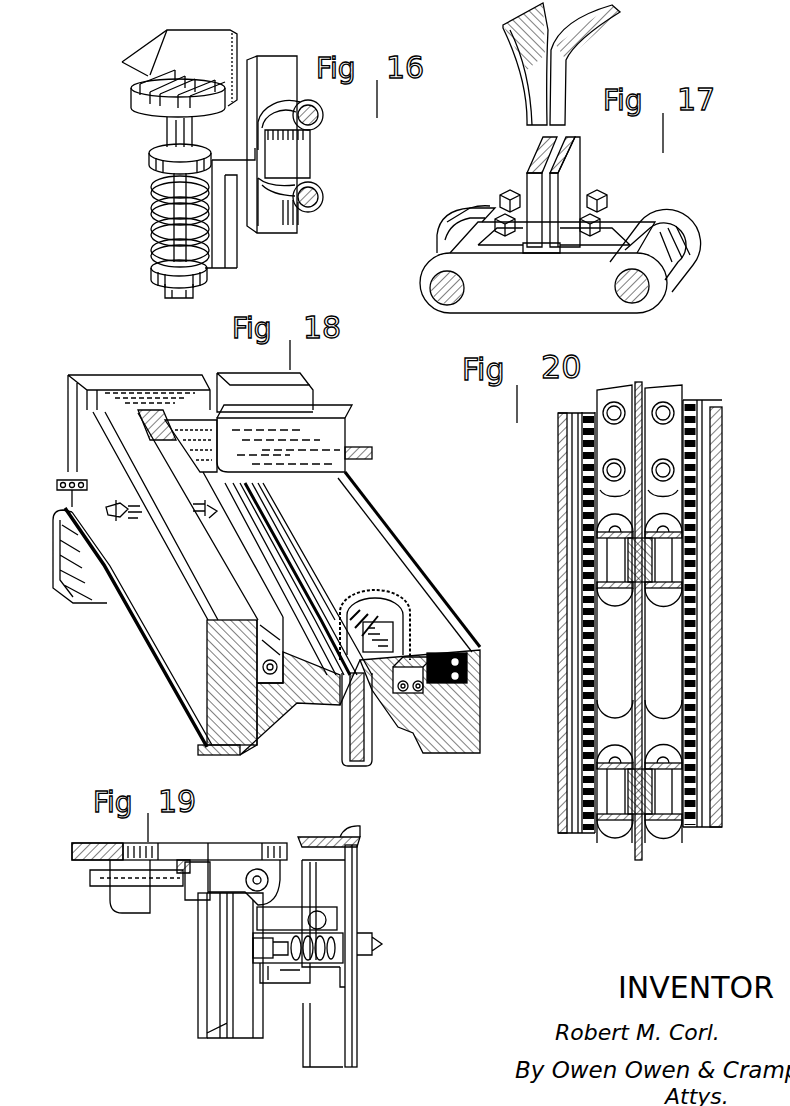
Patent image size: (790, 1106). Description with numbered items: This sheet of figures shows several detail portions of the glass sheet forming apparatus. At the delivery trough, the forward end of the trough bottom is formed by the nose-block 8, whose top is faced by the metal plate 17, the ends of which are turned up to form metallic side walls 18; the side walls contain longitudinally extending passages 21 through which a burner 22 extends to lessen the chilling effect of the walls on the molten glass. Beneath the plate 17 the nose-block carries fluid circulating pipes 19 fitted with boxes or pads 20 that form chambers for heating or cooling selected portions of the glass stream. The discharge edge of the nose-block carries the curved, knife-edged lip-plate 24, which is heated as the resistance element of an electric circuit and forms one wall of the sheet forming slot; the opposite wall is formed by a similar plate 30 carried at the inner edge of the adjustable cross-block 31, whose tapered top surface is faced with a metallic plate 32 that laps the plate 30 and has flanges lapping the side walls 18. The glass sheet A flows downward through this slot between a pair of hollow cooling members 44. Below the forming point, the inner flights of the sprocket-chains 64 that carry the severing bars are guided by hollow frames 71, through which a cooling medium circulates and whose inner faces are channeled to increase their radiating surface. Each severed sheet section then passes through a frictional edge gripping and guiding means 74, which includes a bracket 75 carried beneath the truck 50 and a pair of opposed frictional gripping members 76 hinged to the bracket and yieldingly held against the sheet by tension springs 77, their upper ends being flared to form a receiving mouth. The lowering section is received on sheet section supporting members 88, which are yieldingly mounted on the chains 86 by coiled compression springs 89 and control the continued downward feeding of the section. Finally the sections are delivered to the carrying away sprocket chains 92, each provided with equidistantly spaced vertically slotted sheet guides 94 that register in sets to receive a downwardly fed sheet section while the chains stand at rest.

In FIG. 16, the sheet section supporting member 88 is at (137, 97).
In FIG. 16, the coiled compression spring 89 is at (152, 205).
In FIG. 16, the chain 86 is at (282, 226).
In FIG. 17, the sheet guide 94 is at (556, 101).
In FIG. 17, the sprocket chain 92 is at (653, 285).
In FIG. 18, the passage 21 is at (293, 402).
In FIG. 18, the metallic side wall 18 is at (318, 445).
In FIG. 18, the burner 22 is at (366, 452).
In FIG. 18, the metal plate 17 is at (368, 548).
In FIG. 18, the metallic plate 32 is at (257, 556).
In FIG. 18, the lip-plate 24 is at (307, 590).
In FIG. 18, the fluid circulating pipe 19 is at (380, 610).
In FIG. 18, the box or pad 20 is at (400, 648).
In FIG. 18, the nose-block 8 is at (460, 713).
In FIG. 18, the plate 30 is at (333, 703).
In FIG. 18, the hollow cooling member 44 is at (358, 760).
In FIG. 18, the cross-block 31 is at (225, 662).
In FIG. 18, the glass sheet A is at (80, 592).
In FIG. 19, the truck 50 is at (93, 843).
In FIG. 19, the frictional sheet edge gripping member 76 is at (353, 863).
In FIG. 19, the frictional edge gripping and guiding means 74 is at (360, 904).
In FIG. 19, the bracket 75 is at (204, 960).
In FIG. 19, the tension spring 77 is at (305, 963).
In FIG. 20, the sprocket-chain 64 is at (665, 406).
In FIG. 20, the frame 71 is at (572, 523).